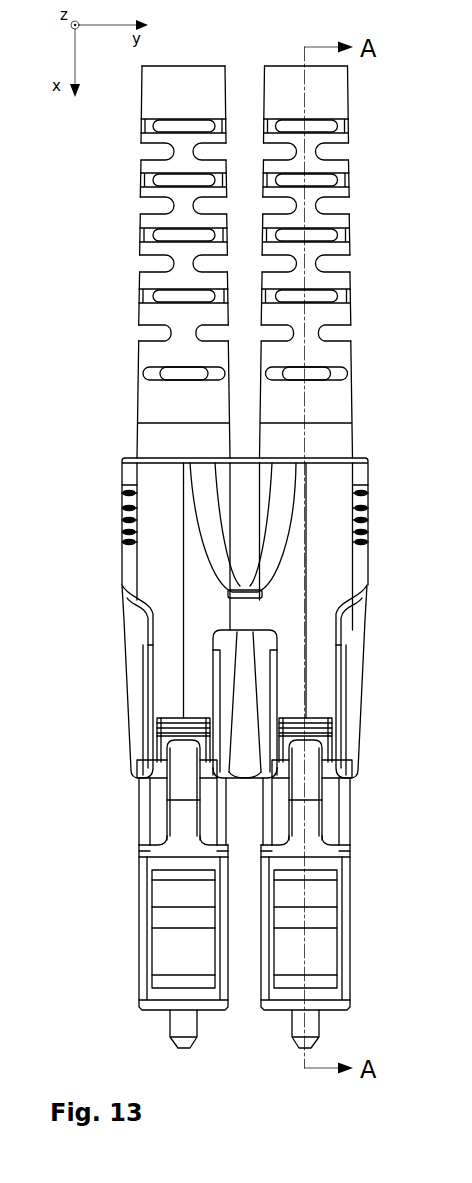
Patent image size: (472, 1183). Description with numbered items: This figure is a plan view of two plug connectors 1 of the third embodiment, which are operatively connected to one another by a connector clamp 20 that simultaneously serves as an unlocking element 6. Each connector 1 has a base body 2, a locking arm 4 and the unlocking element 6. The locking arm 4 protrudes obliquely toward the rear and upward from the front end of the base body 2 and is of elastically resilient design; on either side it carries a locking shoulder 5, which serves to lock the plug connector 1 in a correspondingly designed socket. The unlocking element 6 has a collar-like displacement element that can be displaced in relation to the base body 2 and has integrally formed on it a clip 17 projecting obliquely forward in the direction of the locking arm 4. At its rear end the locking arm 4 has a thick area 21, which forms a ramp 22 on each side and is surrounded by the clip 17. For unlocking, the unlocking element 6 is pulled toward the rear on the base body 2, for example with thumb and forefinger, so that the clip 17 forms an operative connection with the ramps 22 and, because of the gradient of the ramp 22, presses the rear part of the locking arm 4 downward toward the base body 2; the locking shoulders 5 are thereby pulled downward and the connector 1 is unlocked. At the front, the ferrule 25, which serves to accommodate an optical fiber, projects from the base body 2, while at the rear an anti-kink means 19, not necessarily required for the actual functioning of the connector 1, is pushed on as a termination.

The connector 1 is at (241, 932).
The base body 2 is at (140, 958).
The locking arm 4 is at (130, 779).
The locking shoulder 5 is at (160, 858).
The unlocking element 6 is at (165, 520).
The clip 17 is at (183, 782).
The anti-kink means 19 is at (170, 356).
The connector clamp 20 is at (158, 582).
The thick area 21 is at (186, 718).
The ramp 22 is at (214, 735).
The ferrule 25 is at (170, 1030).